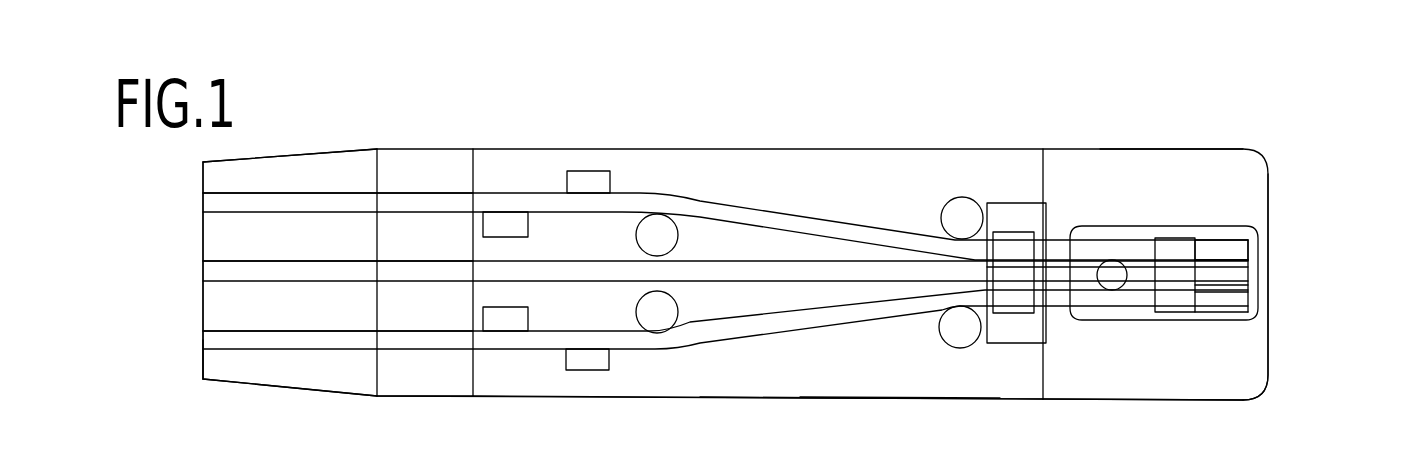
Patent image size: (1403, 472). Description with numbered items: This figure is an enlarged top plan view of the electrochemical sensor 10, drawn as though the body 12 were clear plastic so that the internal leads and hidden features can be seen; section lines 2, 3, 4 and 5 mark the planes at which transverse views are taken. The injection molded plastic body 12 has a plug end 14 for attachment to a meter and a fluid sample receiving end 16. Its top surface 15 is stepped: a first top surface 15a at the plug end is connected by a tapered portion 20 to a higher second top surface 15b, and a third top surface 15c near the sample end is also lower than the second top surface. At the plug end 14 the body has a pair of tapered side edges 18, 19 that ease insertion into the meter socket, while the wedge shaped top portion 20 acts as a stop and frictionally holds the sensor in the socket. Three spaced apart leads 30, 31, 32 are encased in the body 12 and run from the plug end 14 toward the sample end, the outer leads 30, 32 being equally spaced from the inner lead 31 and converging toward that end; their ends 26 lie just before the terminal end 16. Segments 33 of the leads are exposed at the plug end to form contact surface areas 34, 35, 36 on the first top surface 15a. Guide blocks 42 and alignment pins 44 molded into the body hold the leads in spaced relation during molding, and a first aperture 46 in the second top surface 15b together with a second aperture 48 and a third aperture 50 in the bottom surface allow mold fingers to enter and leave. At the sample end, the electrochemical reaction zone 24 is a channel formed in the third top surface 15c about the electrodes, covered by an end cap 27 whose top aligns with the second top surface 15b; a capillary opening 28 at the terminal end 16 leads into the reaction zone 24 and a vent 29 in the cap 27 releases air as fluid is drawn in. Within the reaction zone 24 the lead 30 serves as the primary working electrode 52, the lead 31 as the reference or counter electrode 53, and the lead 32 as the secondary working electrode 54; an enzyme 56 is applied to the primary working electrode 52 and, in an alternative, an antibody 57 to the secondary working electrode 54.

The section line 2- 2 is at (345, 112).
The section line 3- 3 is at (1022, 113).
The section line 4- 4 is at (1178, 468).
The section line 5- 5 is at (1303, 117).
The electrochemical sensor 10 is at (1300, 180).
The body 12 is at (758, 385).
The plug end 14 is at (200, 311).
The top surface 15 is at (792, 385).
The first top surface 15a is at (223, 368).
The second top surface 15b is at (832, 380).
The third top surface 15c is at (1200, 170).
The fluid sample receiving end 16 is at (1275, 334).
The tapered side edge 18 is at (286, 153).
The tapered side edge 19 is at (286, 392).
The tapered portion 20 is at (428, 380).
The electrochemical reaction zone 24 is at (1205, 313).
The lead ends 26 is at (1258, 300).
The end cap 27 is at (1094, 382).
The capillary opening 28 is at (1258, 236).
The vent 29 is at (1111, 260).
The lead 30 is at (404, 337).
The lead 31 is at (404, 264).
The lead 32 is at (401, 203).
The segments 33 is at (363, 198).
The contact surface area 34 is at (229, 337).
The contact surface area 35 is at (240, 264).
The contact surface area 36 is at (239, 203).
The guide blocks 42 is at (528, 226).
The alignment pins 44 is at (678, 238).
The first aperture 46 is at (990, 344).
The second aperture 48 is at (1008, 232).
The third aperture 50 is at (1162, 313).
The primary working electrode 52 is at (1235, 298).
The reference or counter electrode 53 is at (1240, 275).
The secondary working electrode 54 is at (1230, 250).
The enzyme 56 is at (1218, 300).
The antibody 57 is at (1208, 250).